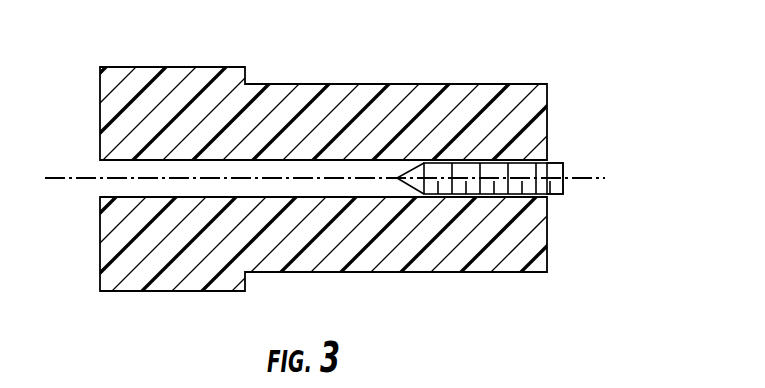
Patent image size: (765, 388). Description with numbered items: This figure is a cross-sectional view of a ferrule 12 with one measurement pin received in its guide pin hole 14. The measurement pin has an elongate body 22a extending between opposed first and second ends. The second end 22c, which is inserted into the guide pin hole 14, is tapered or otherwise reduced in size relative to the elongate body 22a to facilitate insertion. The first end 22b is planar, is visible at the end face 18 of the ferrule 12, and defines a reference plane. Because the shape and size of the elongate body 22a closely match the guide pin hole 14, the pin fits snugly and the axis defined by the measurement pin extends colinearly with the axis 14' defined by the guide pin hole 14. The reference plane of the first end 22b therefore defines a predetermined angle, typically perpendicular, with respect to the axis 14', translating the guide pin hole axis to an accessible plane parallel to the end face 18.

The ferrule 12 is at (382, 174).
The guide pin hole 14 is at (323, 246).
The axis 14' is at (325, 216).
The end face 18 is at (550, 126).
The elongate body 22a is at (498, 197).
The first end 22b is at (565, 188).
The second end 22c is at (403, 165).